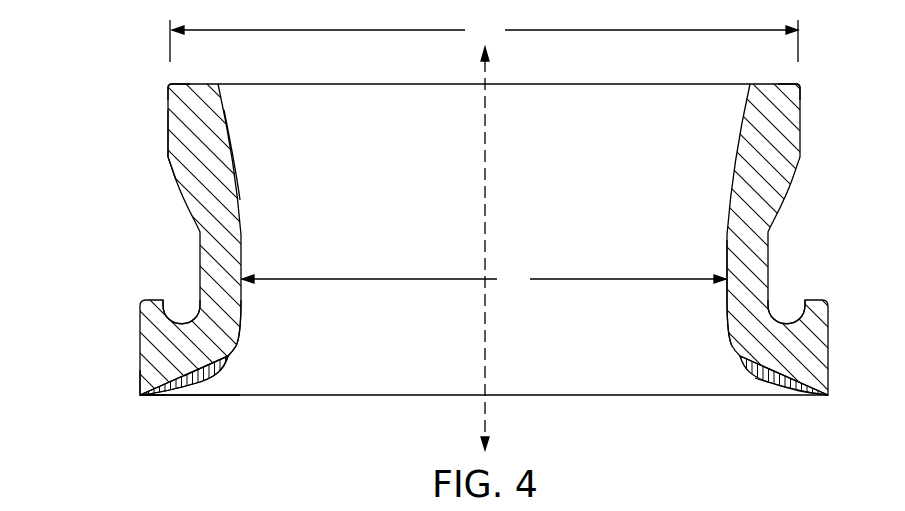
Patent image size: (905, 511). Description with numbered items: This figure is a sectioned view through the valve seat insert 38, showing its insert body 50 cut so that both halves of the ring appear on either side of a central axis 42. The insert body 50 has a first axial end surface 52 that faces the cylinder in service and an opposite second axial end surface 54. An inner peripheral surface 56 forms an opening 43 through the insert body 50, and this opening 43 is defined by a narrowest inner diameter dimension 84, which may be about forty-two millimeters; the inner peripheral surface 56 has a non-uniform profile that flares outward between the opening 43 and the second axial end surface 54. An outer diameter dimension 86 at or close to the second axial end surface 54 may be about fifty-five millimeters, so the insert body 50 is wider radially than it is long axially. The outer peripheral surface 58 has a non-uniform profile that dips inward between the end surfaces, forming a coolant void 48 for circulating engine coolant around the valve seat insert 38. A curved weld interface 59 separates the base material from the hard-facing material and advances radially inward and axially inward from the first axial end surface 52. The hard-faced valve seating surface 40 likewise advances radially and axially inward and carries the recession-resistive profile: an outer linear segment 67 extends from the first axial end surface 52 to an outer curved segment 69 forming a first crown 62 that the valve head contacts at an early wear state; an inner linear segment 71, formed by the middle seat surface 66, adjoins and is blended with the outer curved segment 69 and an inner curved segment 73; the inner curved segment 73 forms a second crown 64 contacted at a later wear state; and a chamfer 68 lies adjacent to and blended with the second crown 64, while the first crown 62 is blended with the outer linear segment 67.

The valve seat insert 38 is at (88, 78).
The valve seating surface 40 is at (228, 372).
The central axis 42 is at (485, 428).
The opening 43 is at (720, 324).
The coolant void 48 is at (187, 303).
The insert body 50 is at (178, 84).
The first axial end surface 52 is at (131, 404).
The second axial end surface 54 is at (789, 84).
The inner peripheral surface 56 is at (233, 153).
The outer peripheral surface 58 is at (172, 160).
The weld interface 59 is at (793, 321).
The first crown 62 is at (170, 402).
The second crown 64 is at (214, 380).
The middle seat surface 66 is at (200, 379).
The outer linear segment 67 is at (811, 396).
The chamfer 68 is at (223, 360).
The outer curved segment 69 is at (788, 396).
The inner linear segment 71 is at (767, 395).
The inner curved segment 73 is at (755, 380).
The inner diameter dimension 84 is at (484, 274).
The outer diameter dimension 86 is at (484, 38).